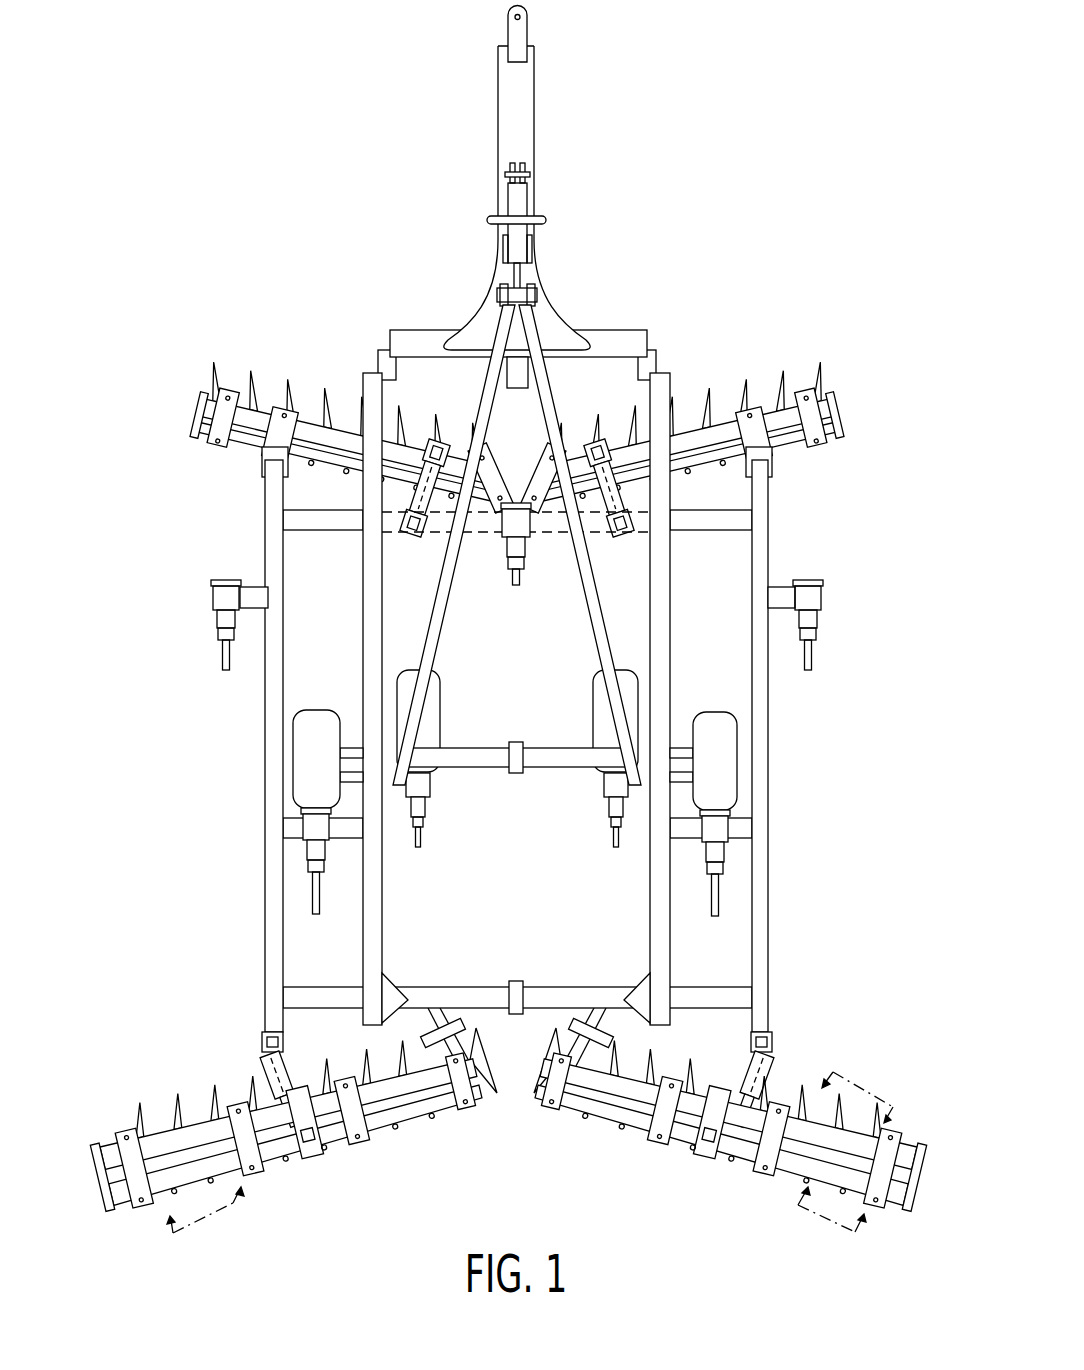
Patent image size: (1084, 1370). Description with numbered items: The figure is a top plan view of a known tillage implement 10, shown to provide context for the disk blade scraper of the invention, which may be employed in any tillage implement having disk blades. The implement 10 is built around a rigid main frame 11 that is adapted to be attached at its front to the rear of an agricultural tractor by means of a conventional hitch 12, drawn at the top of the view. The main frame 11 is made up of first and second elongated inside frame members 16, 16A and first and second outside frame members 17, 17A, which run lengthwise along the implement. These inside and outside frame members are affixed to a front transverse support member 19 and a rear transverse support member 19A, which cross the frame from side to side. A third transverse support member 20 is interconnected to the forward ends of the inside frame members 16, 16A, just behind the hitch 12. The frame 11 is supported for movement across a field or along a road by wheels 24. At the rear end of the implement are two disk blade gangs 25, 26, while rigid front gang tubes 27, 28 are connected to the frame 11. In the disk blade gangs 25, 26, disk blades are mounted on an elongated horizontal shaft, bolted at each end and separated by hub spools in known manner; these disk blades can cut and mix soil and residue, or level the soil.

The tillage implement 10 is at (517, 638).
The main frame 11 is at (519, 650).
The hitch 12 is at (518, 36).
The first inside frame member 16 is at (378, 917).
The second inside frame member 16A is at (660, 927).
The first outside frame member 17 is at (270, 921).
The second outside frame member 17A is at (762, 923).
The front transverse support member 19 is at (706, 524).
The rear transverse support member 19A is at (706, 995).
The third transverse support member 20 is at (607, 340).
The wheels 24 is at (318, 720).
The first disk blade gang 25 is at (290, 1111).
The second disk blade gang 26 is at (740, 1111).
The first front gang tube 27 is at (167, 1160).
The second front gang tube 28 is at (868, 1157).